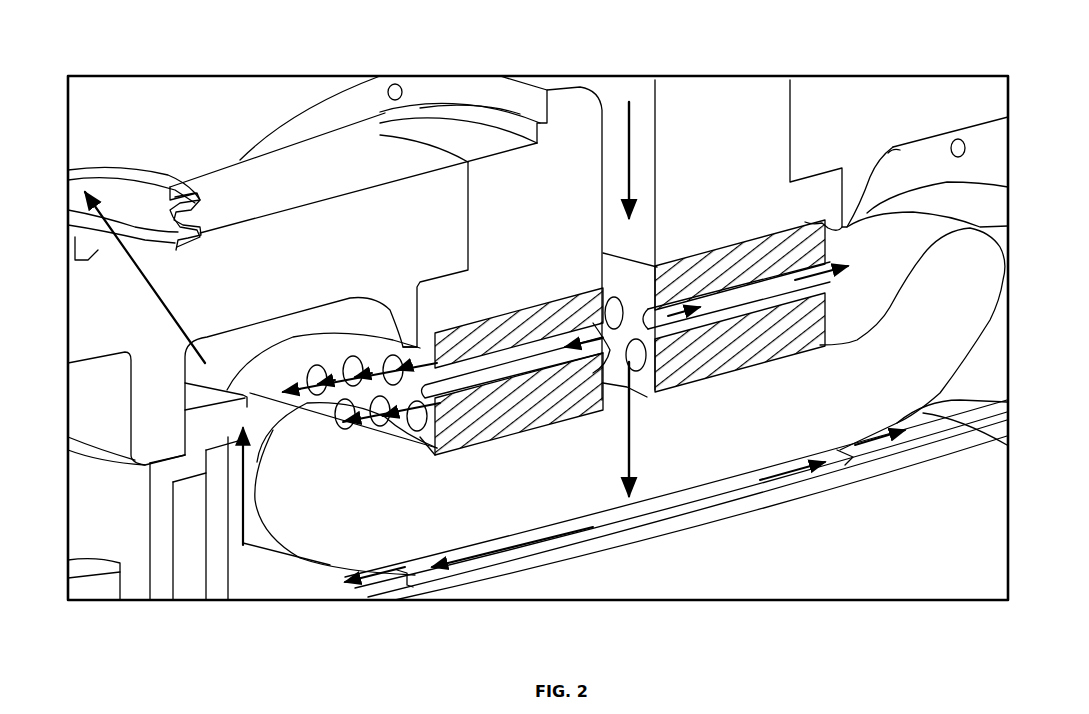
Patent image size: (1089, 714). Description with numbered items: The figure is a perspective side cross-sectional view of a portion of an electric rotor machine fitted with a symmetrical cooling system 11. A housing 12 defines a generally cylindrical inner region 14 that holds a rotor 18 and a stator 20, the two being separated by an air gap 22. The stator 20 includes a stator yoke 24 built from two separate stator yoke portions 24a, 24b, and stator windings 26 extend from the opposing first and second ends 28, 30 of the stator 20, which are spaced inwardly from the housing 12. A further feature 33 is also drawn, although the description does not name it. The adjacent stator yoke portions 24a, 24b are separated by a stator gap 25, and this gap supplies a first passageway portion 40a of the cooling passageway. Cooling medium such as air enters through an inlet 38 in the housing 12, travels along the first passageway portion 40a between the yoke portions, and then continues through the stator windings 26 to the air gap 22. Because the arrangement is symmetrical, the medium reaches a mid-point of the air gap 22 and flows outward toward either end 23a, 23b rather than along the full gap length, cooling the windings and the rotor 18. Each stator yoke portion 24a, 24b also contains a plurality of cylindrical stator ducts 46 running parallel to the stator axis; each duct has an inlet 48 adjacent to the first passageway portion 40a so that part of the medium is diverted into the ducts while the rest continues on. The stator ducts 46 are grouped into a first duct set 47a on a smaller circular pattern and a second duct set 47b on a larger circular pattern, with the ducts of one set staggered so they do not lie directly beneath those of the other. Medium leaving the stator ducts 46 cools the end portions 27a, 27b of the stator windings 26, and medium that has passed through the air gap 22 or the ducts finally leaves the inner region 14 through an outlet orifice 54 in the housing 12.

The symmetrical cooling system 11 is at (647, 375).
The housing 12 is at (233, 180).
The inner region 14 is at (1005, 148).
The rotor 18 is at (710, 577).
The stator 20 is at (853, 250).
The air gap 22 is at (628, 510).
The first end of the air gap 23a is at (980, 404).
The second end of the air gap 23b is at (345, 590).
The stator yoke 24 is at (643, 242).
The first stator yoke portion 24a is at (507, 317).
The second stator yoke portion 24b is at (787, 300).
The stator gap 25 is at (613, 143).
The stator windings 26 is at (963, 303).
The first end portion of the stator windings 27a is at (892, 280).
The second end portion of the stator windings 27b is at (350, 420).
The first end of the stator 28 is at (997, 237).
The second end of the stator 30 is at (258, 470).
The bottom wall 33 is at (467, 450).
The inlet 38 is at (642, 108).
The first passageway portion 40a is at (620, 305).
The stator ducts 46 is at (538, 330).
The first duct set 47a is at (403, 433).
The second duct set 47b is at (362, 357).
The inlet 48 is at (612, 335).
The outlet orifice 54 is at (117, 233).